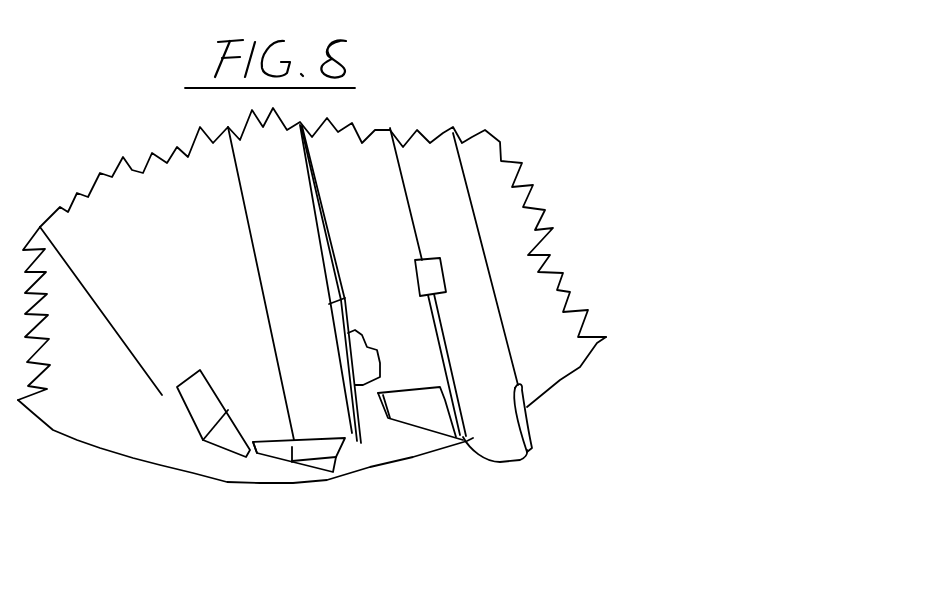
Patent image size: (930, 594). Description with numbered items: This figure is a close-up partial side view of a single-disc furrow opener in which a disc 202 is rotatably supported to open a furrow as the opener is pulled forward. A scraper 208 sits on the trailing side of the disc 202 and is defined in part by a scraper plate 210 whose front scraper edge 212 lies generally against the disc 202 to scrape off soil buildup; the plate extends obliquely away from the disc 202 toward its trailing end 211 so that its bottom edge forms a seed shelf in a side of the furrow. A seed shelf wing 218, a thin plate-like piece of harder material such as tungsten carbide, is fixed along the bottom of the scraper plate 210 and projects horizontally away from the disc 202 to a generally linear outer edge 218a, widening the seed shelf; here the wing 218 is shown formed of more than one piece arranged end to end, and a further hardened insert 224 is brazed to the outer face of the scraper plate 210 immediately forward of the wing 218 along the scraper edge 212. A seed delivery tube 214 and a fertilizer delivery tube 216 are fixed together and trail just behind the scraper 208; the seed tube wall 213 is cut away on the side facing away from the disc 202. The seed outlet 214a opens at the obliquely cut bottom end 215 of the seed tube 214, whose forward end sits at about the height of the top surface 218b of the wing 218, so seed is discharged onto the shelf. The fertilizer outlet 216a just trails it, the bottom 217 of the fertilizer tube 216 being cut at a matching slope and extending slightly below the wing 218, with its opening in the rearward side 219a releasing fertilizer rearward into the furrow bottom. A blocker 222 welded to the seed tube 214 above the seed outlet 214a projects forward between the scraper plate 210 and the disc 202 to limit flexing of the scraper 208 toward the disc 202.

The disc 202 is at (88, 404).
The scraper 208 is at (118, 219).
The scraper plate 210 is at (165, 295).
The trailing end of the scraper plate 211 is at (331, 303).
The front scraper edge 212 is at (162, 395).
The cord 213 is at (377, 204).
The seed delivery tube 214 is at (345, 181).
The seed outlet 214a is at (424, 422).
The bottom end of the seed tube 215 is at (410, 445).
The fertilizer delivery tube 216 is at (452, 197).
The fertilizer outlet 216a is at (540, 437).
The bottom of the fertilizer tube 217 is at (513, 462).
The seed shelf wing 218 is at (347, 458).
The outer edge of the wing 218a is at (312, 463).
The top surface of the wing 218b is at (317, 449).
The rearward side of the fertilizer tube 219a is at (502, 314).
The blocker 222 is at (358, 362).
The insert 224 is at (204, 403).